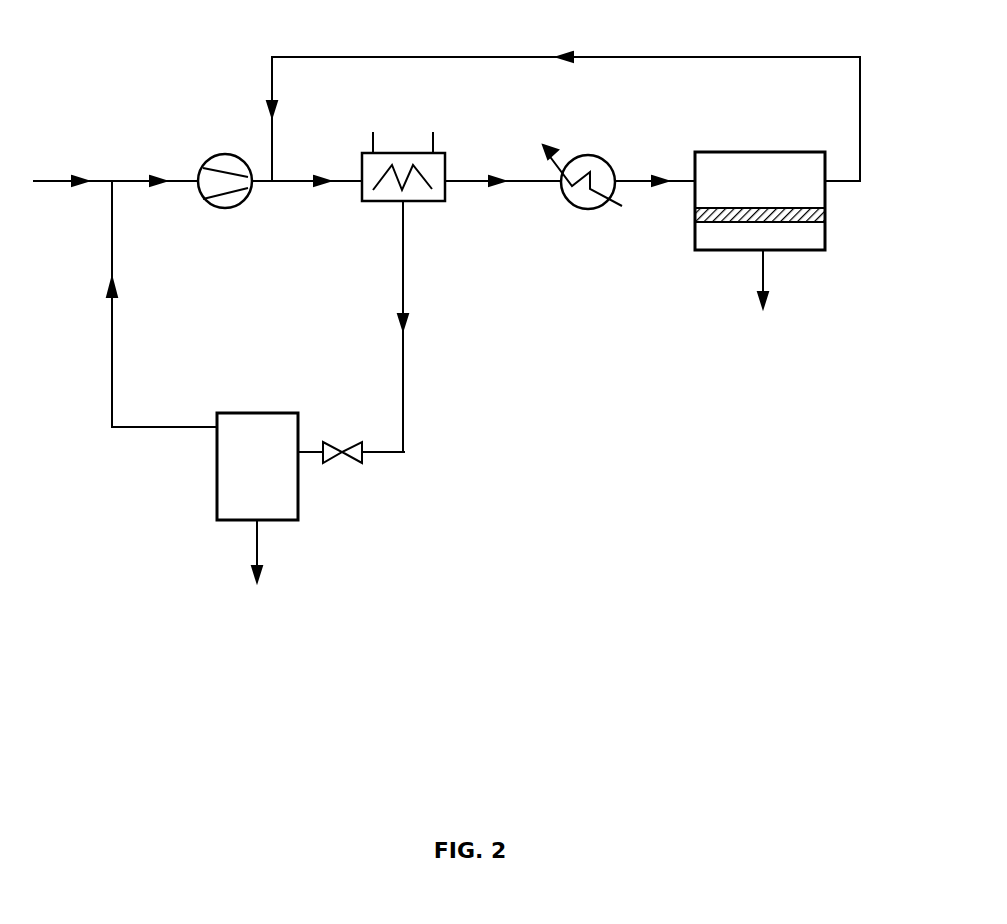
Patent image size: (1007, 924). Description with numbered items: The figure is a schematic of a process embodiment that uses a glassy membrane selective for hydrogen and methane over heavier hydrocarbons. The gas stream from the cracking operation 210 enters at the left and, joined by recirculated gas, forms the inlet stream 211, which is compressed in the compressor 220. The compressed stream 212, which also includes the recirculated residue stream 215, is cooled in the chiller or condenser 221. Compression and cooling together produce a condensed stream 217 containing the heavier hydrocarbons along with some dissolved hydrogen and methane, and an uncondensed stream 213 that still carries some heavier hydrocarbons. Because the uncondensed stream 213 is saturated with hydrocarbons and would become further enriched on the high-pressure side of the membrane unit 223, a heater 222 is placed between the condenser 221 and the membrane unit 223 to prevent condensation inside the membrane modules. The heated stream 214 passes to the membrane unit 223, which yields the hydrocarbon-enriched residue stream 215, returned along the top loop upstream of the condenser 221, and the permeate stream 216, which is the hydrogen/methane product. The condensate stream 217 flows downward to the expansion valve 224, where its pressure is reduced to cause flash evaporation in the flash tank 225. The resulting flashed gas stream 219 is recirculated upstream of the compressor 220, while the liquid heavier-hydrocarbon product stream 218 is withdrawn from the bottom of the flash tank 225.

The gas stream from the cracking operation 210 is at (72, 165).
The inlet stream 211 is at (155, 165).
The compressed stream 212 is at (307, 165).
The uncondensed stream 213 is at (503, 167).
The heated stream 214 is at (655, 167).
The hydrocarbon-enriched residue stream 215 is at (563, 100).
The permeate stream 216 is at (763, 296).
The condensed stream 217 is at (430, 326).
The liquid C2+ hydrocarbons product stream 218 is at (257, 565).
The flashed gas stream 219 is at (137, 304).
The compressor 220 is at (210, 156).
The chiller or condenser 221 is at (443, 153).
The heater 222 is at (595, 156).
The membrane unit 223 is at (825, 237).
The expansion valve 224 is at (360, 462).
The flash tank 225 is at (217, 507).